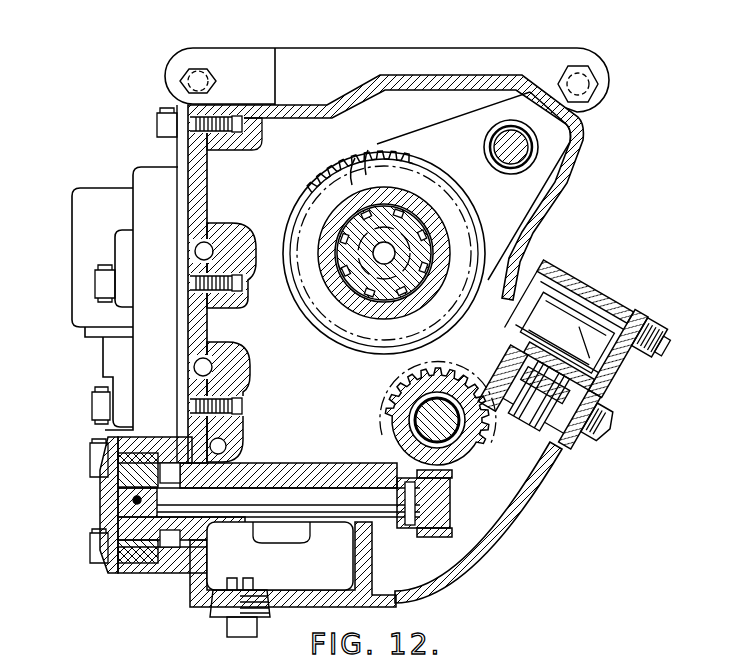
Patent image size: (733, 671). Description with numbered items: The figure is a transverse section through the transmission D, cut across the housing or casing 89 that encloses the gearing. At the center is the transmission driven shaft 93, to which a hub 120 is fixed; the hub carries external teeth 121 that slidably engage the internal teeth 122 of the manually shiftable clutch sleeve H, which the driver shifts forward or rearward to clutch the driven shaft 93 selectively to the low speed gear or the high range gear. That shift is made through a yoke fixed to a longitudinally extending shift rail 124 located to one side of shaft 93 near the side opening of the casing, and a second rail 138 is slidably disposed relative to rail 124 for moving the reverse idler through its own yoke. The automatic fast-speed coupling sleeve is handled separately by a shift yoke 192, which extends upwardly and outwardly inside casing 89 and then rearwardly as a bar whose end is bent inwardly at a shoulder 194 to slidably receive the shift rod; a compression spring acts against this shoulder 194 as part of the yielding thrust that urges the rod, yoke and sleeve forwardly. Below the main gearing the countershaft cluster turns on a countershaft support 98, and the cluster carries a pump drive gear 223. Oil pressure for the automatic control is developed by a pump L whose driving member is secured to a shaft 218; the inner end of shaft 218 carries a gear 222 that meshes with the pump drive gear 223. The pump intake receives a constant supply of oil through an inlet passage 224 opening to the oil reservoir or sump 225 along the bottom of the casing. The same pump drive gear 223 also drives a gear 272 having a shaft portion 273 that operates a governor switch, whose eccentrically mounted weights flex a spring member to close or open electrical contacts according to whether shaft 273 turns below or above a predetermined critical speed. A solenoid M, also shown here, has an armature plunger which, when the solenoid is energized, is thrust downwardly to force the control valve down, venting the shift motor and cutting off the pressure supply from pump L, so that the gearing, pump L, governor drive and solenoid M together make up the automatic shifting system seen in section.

The housing 89 is at (420, 48).
The shoulder 194 is at (522, 104).
The transmission D is at (582, 132).
The shift yoke 192 is at (522, 200).
The solenoid M is at (72, 232).
The shift rail 124 is at (250, 262).
The second rail 138 is at (243, 368).
The clutch sleeve H is at (368, 241).
The internal teeth 122 is at (322, 186).
The hub 120 is at (348, 168).
The external teeth 121 is at (370, 158).
The driven shaft 93 is at (418, 280).
The pump drive gear 223 is at (415, 413).
The countershaft support 98 is at (398, 420).
The shaft portion 273 is at (533, 358).
The gear 272 is at (520, 477).
The shaft 218 is at (258, 500).
The pump L is at (103, 470).
The gear 222 is at (440, 515).
The inlet passage 224 is at (212, 538).
The oil reservoir 225 is at (293, 579).